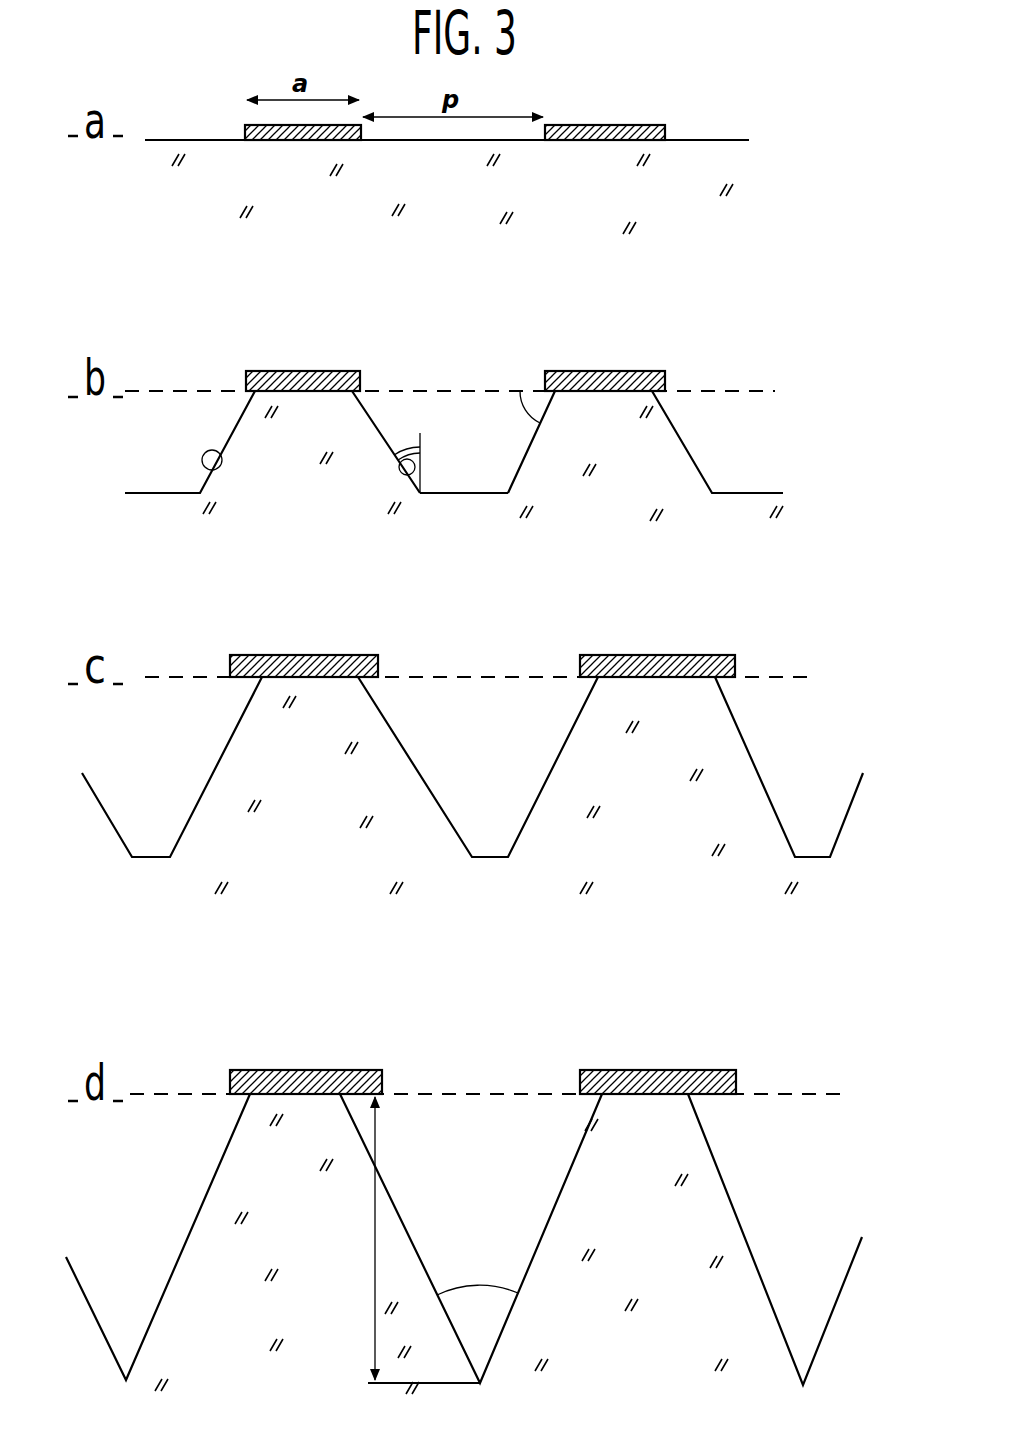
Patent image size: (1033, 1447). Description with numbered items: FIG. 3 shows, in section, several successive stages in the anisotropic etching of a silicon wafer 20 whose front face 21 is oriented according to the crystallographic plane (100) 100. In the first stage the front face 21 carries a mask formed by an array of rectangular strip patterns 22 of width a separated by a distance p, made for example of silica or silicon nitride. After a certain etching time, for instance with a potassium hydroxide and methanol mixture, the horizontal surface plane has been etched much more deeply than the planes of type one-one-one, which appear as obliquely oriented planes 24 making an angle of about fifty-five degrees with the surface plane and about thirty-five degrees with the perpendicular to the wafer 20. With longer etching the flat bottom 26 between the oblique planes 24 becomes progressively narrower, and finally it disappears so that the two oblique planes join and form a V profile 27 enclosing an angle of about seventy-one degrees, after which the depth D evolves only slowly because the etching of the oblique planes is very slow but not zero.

The wafer 20 is at (586, 205).
The front face 21 is at (733, 140).
The mask patterns 22 is at (620, 126).
The obliquely oriented planes 24 is at (405, 478).
The bottom 26 is at (487, 493).
The V profile 27 is at (557, 1195).
The crystallographic plane 100 is at (184, 140).